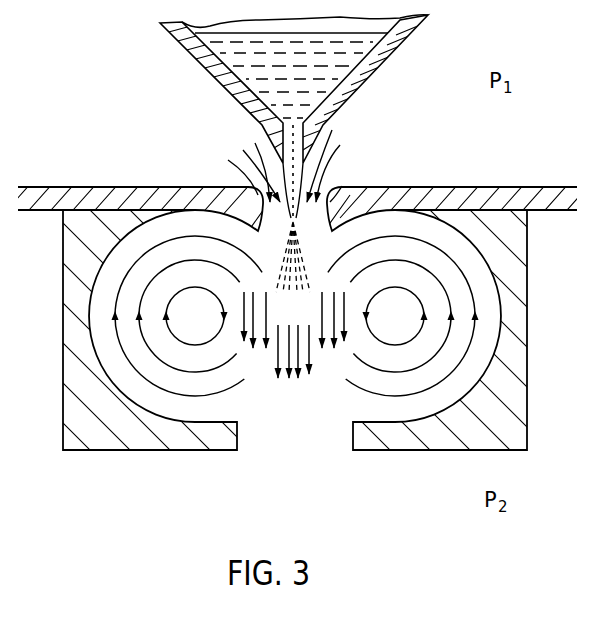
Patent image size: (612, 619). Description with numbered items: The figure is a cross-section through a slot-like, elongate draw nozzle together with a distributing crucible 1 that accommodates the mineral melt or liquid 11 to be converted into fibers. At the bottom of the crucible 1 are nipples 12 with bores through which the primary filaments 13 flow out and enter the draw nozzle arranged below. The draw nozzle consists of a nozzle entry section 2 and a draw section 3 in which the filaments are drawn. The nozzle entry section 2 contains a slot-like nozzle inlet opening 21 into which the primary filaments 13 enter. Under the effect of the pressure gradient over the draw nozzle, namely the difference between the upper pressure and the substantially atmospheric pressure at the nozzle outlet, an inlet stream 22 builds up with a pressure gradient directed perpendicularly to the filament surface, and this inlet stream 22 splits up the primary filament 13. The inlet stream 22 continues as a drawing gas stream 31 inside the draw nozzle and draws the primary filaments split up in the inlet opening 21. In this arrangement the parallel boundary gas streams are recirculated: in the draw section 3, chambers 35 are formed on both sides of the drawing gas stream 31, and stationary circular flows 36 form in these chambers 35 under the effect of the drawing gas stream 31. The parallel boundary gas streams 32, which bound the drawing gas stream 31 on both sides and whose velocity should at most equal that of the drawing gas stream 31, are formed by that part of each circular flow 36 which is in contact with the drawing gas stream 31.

The distributing crucible 1 is at (410, 44).
The liquid 11 is at (338, 58).
The nipples 12 is at (318, 137).
The primary filaments 13 is at (255, 143).
The nozzle entry section 2 is at (438, 184).
The nozzle inlet opening 21 is at (342, 186).
The inlet stream 22 is at (243, 150).
The draw section 3 is at (531, 351).
The drawing gas stream 31 is at (292, 381).
The parallel boundary gas streams 32 is at (266, 342).
The chambers 35 is at (295, 316).
The circular flows 36 is at (470, 288).